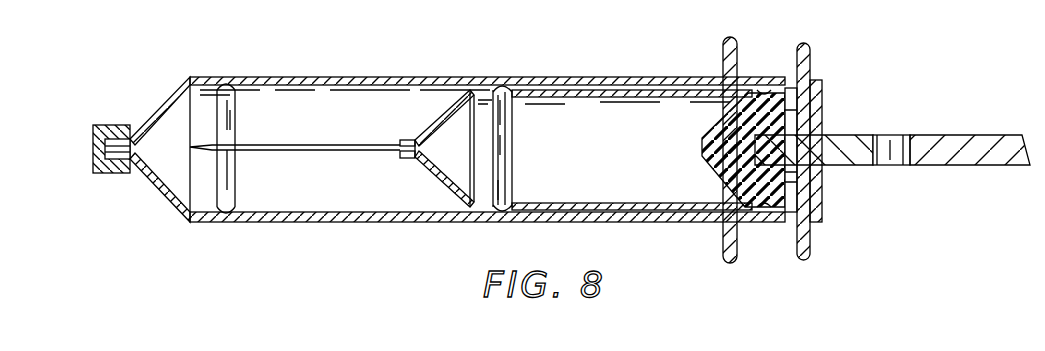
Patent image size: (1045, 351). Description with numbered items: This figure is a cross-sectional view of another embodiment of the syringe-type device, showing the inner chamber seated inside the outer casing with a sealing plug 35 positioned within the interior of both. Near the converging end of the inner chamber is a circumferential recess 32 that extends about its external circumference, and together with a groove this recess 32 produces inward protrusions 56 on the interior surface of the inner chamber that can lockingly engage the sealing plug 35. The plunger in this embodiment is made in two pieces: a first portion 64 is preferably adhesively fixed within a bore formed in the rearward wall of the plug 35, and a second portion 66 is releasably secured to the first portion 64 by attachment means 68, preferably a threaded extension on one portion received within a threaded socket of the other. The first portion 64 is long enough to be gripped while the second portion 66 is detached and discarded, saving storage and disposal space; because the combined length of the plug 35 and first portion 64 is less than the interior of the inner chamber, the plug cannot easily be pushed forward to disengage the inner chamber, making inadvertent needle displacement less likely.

The circumferential recess 32 is at (502, 90).
The inward protrusions 56 is at (505, 196).
The sealing plug 35 is at (700, 133).
The first portion 64 is at (860, 143).
The second portion 66 is at (958, 135).
The attachment means 68 is at (890, 167).